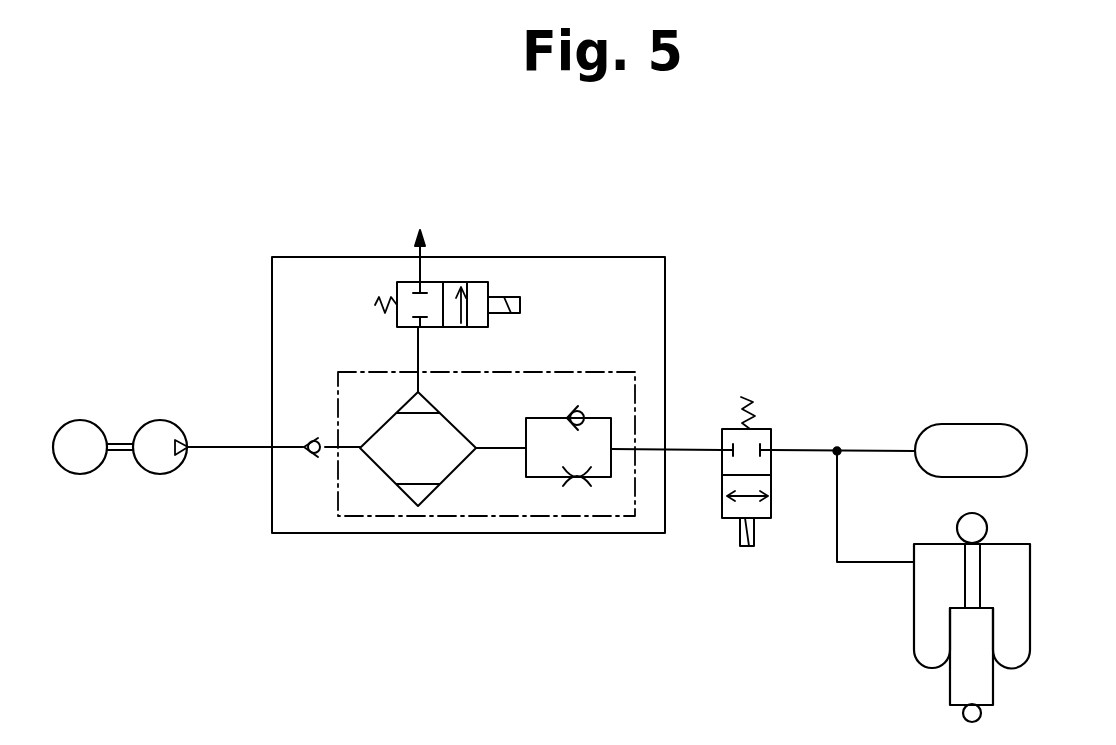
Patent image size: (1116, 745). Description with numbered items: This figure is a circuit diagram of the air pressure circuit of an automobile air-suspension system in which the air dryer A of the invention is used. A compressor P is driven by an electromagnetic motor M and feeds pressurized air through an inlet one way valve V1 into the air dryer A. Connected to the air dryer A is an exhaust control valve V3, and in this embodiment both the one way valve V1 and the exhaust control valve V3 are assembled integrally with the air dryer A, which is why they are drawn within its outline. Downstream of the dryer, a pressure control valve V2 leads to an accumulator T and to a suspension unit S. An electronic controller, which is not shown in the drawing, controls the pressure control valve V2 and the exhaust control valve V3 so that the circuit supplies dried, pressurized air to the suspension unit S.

The electromagnetic motor M is at (85, 428).
The compressor P is at (167, 428).
The inlet one way valve V1 is at (311, 456).
The air dryer A is at (539, 370).
The exhaust control valve V3 is at (478, 282).
The pressure control valve V2 is at (772, 440).
The accumulator T is at (1020, 451).
The suspension unit S is at (1022, 596).